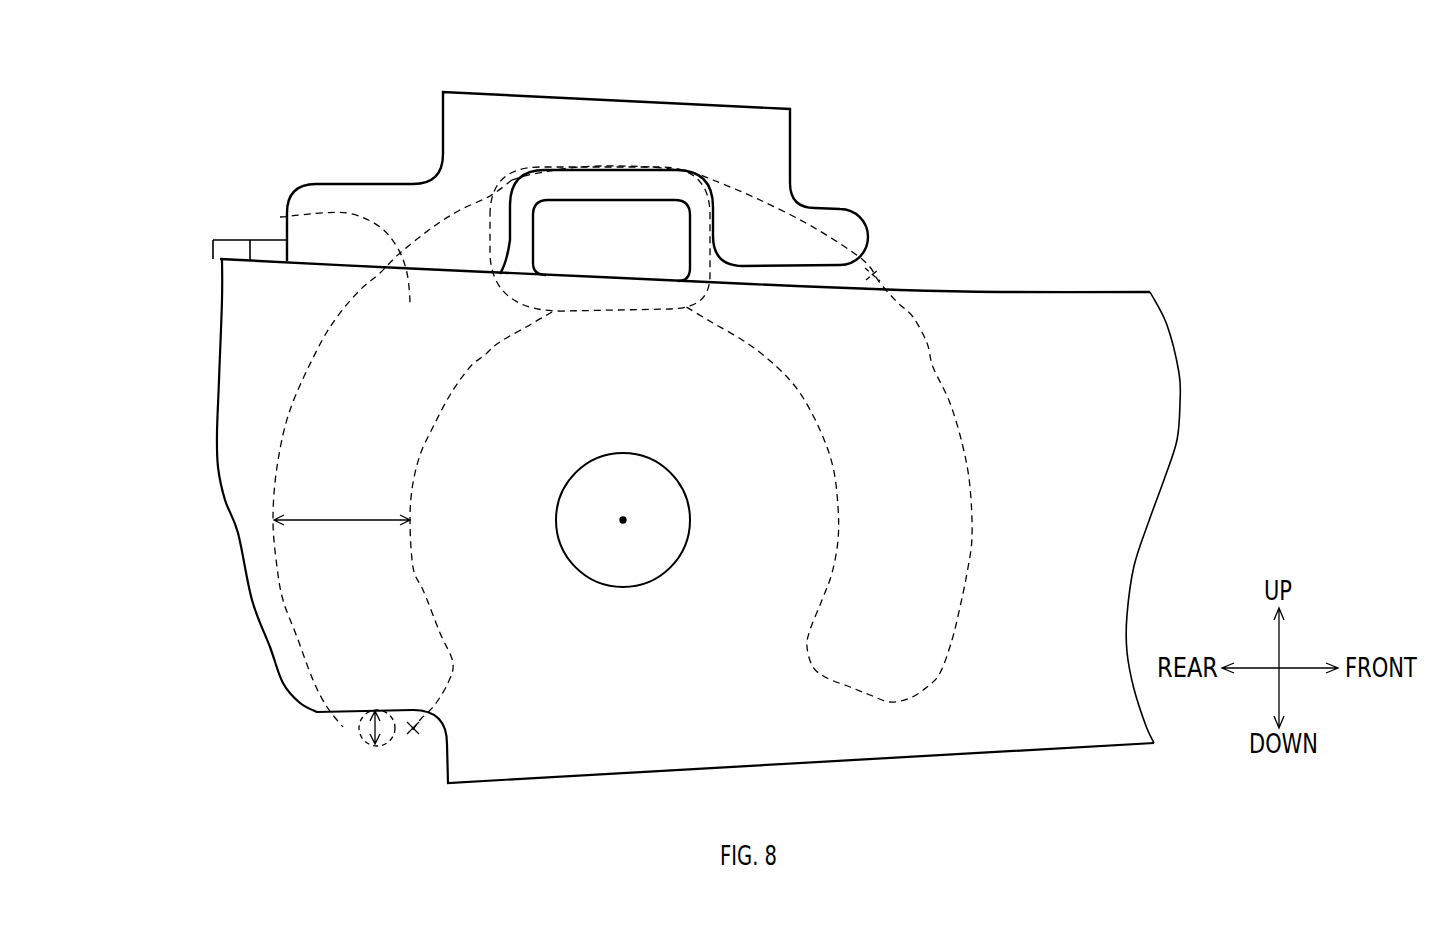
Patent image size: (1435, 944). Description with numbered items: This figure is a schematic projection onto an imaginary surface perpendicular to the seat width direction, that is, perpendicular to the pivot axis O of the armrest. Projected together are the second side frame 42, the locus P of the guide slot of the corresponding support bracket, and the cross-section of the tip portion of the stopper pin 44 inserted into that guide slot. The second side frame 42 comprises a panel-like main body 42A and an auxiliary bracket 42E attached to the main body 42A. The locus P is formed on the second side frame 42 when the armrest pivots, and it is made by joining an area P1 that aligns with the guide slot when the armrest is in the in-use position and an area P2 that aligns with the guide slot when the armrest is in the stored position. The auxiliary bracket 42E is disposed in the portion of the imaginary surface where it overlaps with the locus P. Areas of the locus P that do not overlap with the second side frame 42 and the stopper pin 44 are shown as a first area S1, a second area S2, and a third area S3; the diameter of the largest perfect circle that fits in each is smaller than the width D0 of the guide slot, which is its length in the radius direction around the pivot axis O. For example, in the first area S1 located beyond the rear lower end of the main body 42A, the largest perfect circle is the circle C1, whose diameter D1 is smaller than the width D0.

The second side frame 42 is at (1203, 465).
The main body 42A is at (1097, 318).
The auxiliary bracket 42E is at (470, 100).
The stopper pin 44 is at (625, 223).
The pivot axis O is at (623, 520).
The second area S2 is at (513, 187).
The third area S3 is at (873, 270).
The first area S1 is at (416, 715).
The locus P is at (280, 217).
The area P1 is at (317, 350).
The area P2 is at (933, 343).
The width of the guide slot D0 is at (342, 506).
The diameter D1 is at (367, 728).
The circle C1 is at (328, 727).